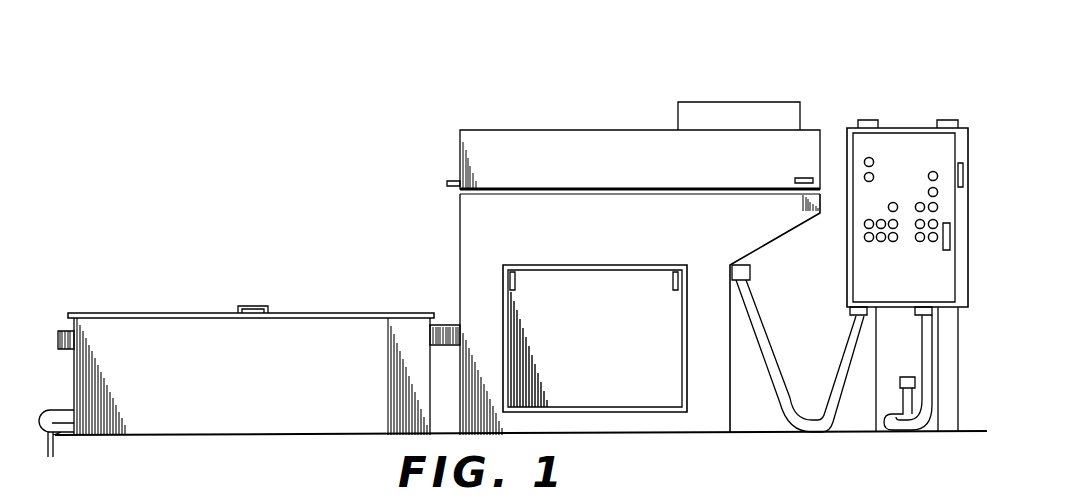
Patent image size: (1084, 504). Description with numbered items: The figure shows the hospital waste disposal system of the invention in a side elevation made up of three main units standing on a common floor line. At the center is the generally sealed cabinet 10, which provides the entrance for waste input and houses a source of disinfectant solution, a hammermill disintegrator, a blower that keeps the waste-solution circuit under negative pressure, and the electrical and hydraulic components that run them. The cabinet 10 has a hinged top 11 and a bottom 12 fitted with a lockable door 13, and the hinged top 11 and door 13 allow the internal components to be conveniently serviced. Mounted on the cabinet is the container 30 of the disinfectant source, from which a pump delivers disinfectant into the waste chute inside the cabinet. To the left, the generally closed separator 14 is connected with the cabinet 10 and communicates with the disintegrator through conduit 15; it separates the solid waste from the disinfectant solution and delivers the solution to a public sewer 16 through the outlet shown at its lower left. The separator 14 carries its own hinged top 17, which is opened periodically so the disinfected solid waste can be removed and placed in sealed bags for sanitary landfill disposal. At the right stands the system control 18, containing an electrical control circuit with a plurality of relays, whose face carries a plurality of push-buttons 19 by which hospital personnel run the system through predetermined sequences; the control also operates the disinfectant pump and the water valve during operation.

The generally sealed cabinet 10 is at (587, 84).
The hinged top 11 is at (503, 138).
The bottom 12 is at (477, 230).
The lockable door 13 is at (597, 275).
The generally closed separator 14 is at (243, 229).
The conduit 15 is at (455, 325).
The public sewer 16 is at (63, 446).
The hinged top 17 is at (183, 315).
The system control 18 is at (903, 93).
The push-buttons 19 is at (912, 262).
The container 30 is at (782, 108).